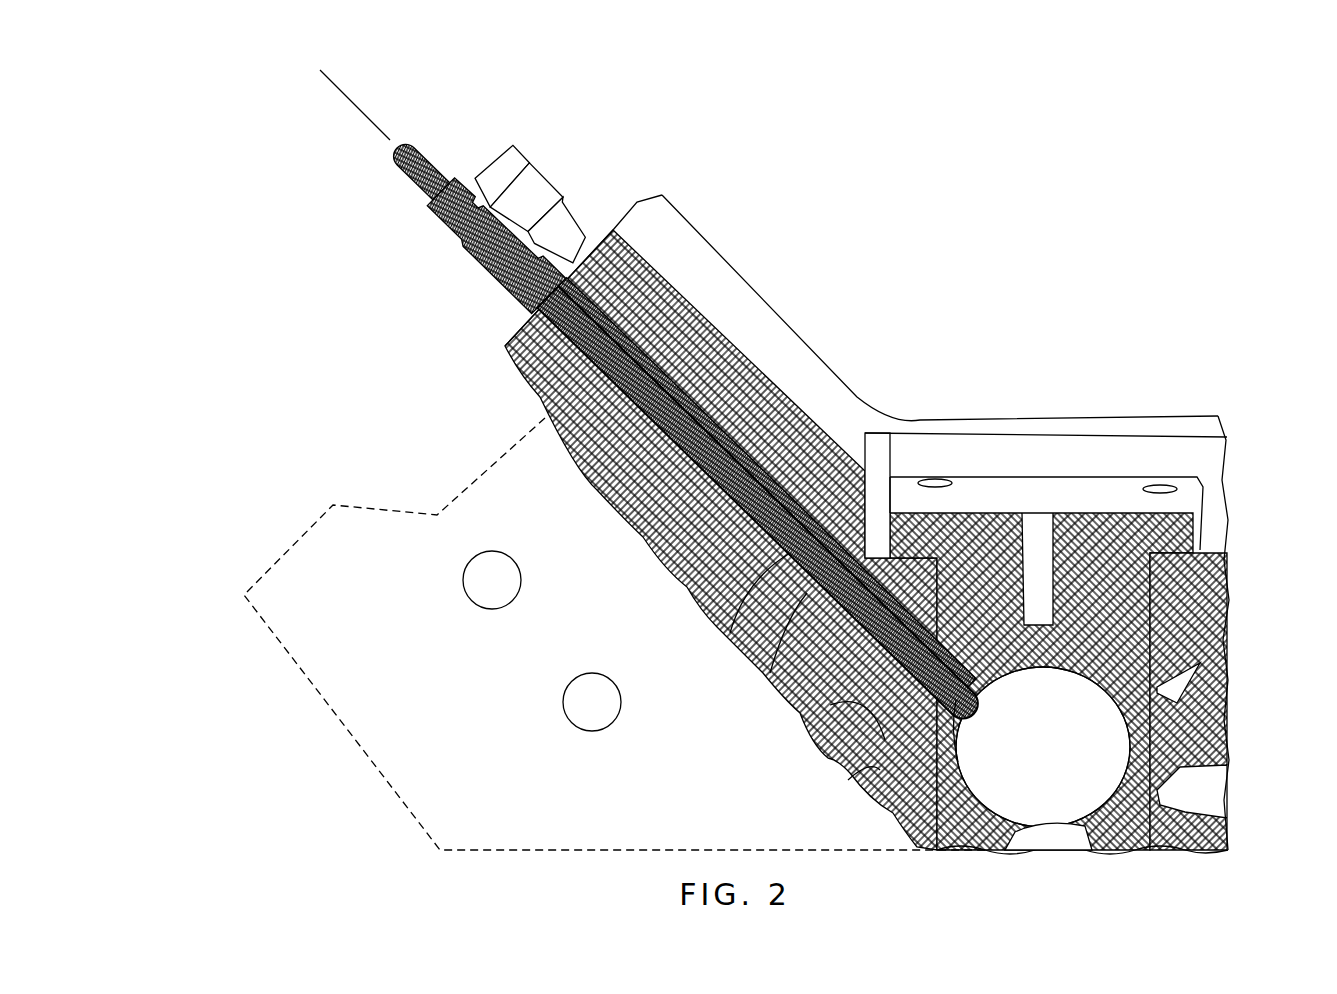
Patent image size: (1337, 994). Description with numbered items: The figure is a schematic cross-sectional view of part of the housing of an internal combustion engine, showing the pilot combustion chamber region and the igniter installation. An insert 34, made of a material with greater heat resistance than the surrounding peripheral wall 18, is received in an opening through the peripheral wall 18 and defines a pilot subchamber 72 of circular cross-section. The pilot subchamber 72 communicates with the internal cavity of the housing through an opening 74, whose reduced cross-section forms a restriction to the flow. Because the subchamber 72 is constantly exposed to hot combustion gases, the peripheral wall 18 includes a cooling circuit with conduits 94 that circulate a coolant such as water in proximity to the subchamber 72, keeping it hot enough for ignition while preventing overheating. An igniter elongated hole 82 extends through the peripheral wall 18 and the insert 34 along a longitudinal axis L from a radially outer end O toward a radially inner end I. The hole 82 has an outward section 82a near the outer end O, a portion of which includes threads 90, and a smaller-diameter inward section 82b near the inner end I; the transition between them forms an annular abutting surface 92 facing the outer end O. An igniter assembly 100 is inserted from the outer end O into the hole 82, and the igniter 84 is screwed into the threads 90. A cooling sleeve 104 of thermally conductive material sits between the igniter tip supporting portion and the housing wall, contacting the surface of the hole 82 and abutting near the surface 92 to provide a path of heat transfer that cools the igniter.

The longitudinal axis L is at (357, 103).
The peripheral wall 18 is at (575, 418).
The insert 34 is at (1137, 540).
The pilot subchamber 72 is at (1087, 741).
The opening 74 is at (1072, 851).
The igniter elongated hole 82 is at (600, 462).
The outward section 82a is at (770, 672).
The inward section 82b is at (848, 780).
The igniter 84 is at (712, 633).
The threads 90 is at (540, 372).
The annular abutting surface 92 is at (830, 706).
The conduits 94 is at (461, 578).
The igniter assembly 100 is at (713, 441).
The cooling sleeve 104 is at (882, 590).
The radially outer end O is at (503, 345).
The radially inner end I is at (968, 730).